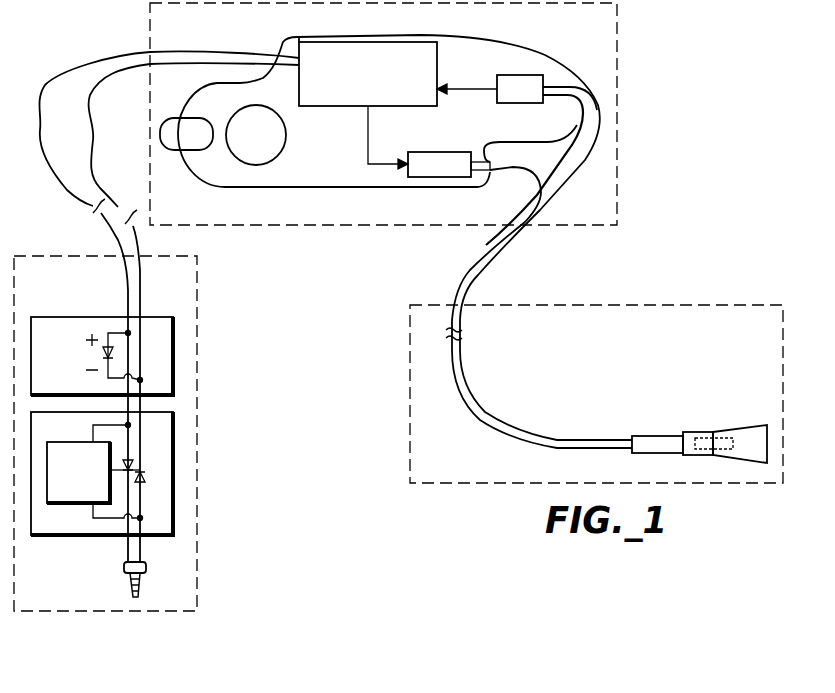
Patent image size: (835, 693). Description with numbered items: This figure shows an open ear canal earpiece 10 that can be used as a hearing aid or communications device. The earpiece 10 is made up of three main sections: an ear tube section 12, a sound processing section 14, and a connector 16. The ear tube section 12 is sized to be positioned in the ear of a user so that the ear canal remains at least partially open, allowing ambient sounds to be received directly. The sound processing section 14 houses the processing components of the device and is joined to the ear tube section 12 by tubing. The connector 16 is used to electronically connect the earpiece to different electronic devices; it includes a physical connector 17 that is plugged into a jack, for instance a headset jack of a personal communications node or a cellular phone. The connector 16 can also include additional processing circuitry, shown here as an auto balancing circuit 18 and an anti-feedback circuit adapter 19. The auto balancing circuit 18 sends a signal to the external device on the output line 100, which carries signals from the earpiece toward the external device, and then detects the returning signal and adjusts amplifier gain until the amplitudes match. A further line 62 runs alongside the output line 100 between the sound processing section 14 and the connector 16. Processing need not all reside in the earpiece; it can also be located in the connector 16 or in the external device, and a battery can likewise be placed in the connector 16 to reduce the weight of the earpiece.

The earpiece 10 is at (683, 118).
The ear tube section 12 is at (623, 305).
The sound processing section 14 is at (617, 38).
The connector 16 is at (197, 307).
The connector 17 is at (145, 583).
The auto balancing circuit 18 is at (173, 483).
The anti-feedback circuit adapter 19 is at (173, 360).
The inner cable 62 is at (92, 176).
The output line 100 is at (78, 200).